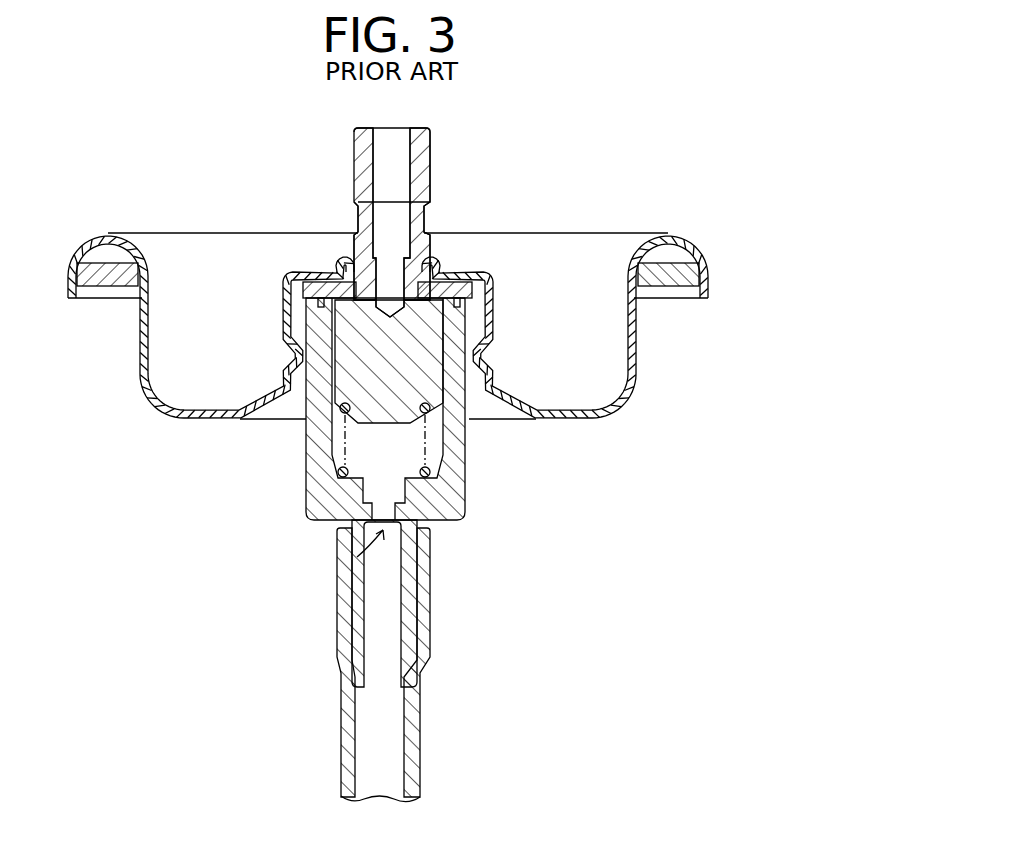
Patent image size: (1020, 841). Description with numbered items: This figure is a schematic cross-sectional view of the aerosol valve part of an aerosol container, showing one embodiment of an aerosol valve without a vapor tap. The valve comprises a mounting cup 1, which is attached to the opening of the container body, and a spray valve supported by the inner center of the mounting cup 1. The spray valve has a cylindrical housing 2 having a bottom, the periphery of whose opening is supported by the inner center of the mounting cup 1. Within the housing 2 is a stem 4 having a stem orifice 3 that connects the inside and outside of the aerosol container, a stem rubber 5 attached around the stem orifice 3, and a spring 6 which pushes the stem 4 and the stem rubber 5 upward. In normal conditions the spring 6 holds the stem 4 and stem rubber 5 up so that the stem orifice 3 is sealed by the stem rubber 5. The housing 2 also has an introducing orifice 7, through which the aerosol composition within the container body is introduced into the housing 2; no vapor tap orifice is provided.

The mounting cup 1 is at (608, 337).
The housing 2 is at (450, 495).
The stem orifice 3 is at (417, 277).
The stem 4 is at (360, 170).
The stem rubber 5 is at (320, 283).
The spring 6 is at (338, 472).
The introducing orifice 7 is at (363, 556).